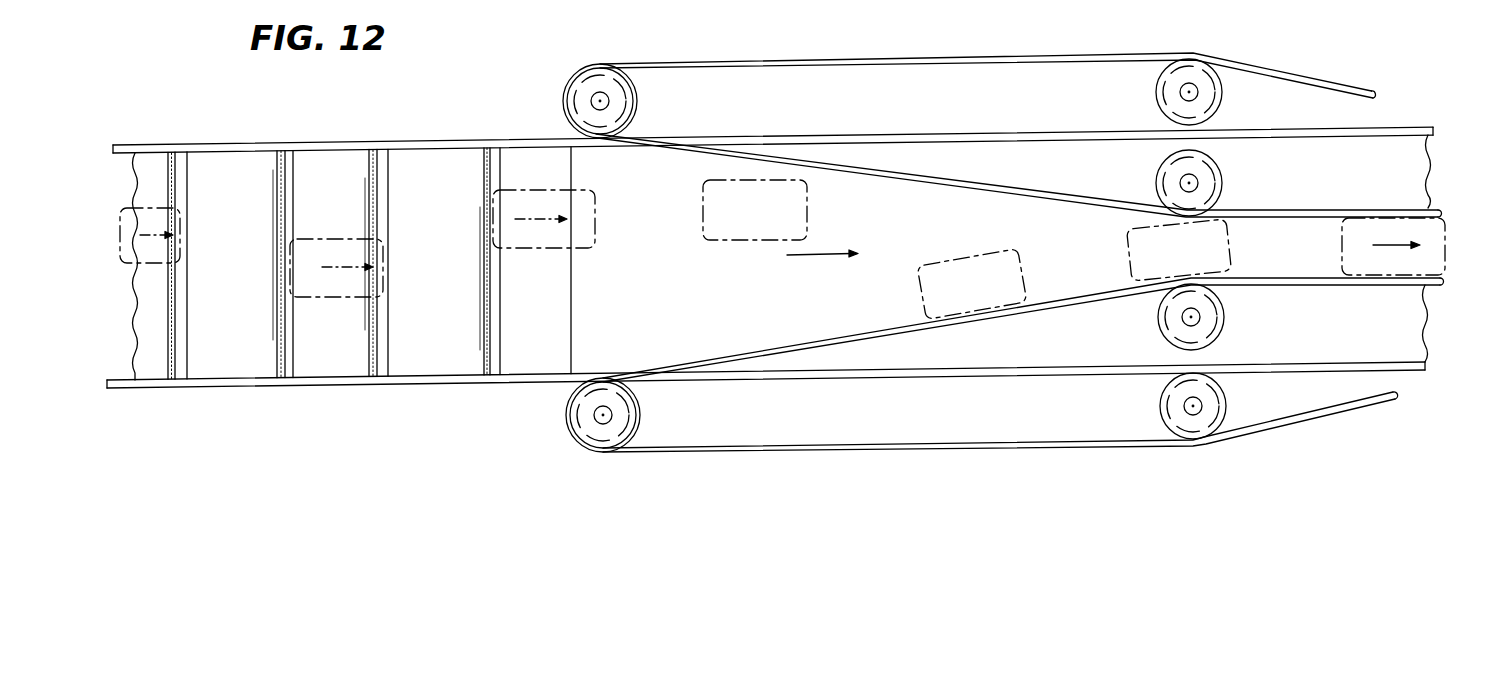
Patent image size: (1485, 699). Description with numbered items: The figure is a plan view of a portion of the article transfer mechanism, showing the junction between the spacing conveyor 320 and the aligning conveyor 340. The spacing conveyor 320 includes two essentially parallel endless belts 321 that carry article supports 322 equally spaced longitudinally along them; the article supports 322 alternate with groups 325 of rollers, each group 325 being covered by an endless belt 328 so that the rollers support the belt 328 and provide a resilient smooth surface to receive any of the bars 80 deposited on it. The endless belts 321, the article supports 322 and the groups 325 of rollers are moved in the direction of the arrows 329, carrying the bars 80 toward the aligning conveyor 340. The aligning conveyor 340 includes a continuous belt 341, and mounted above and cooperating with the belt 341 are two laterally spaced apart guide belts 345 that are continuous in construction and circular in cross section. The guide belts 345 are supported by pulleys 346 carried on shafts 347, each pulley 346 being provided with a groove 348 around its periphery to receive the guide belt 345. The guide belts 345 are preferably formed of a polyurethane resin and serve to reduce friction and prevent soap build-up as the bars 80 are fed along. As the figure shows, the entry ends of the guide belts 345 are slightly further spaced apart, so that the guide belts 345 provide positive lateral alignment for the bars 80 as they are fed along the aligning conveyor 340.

The bar 80 is at (143, 208).
The spacing conveyor 320 is at (243, 406).
The endless belt 321 is at (342, 147).
The article support 322 is at (355, 203).
The group of rollers 325 is at (230, 177).
The endless belt 328 is at (250, 273).
The arrow 329 is at (336, 272).
The aligning conveyor 340 is at (983, 459).
The continuous belt 341 is at (704, 336).
The guide belt 345 is at (745, 66).
The pulley 346 is at (633, 101).
The shaft 347 is at (599, 92).
The groove 348 is at (633, 78).